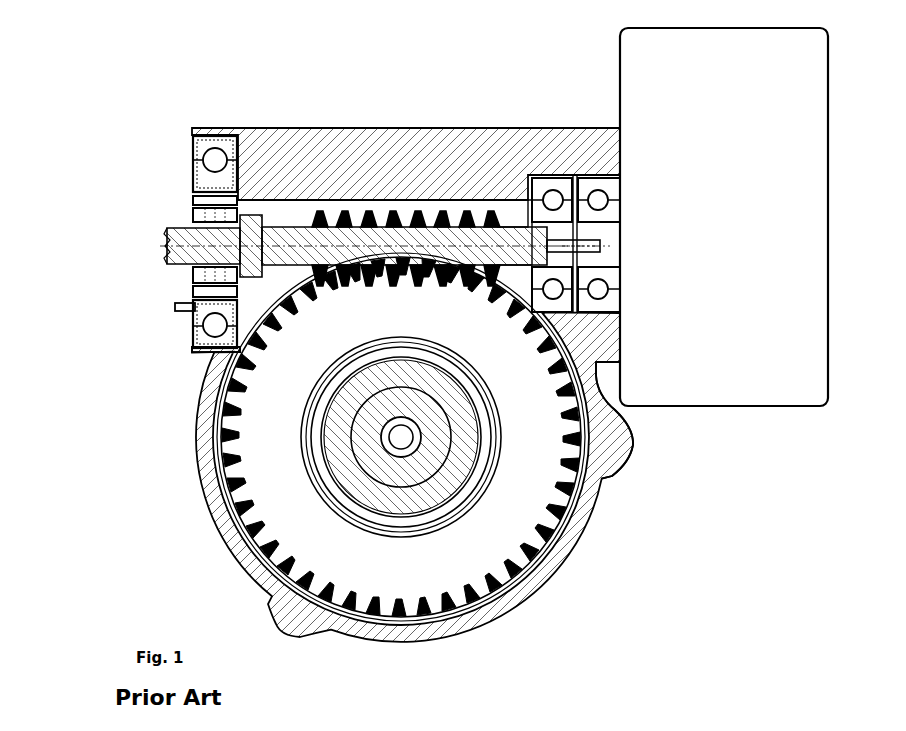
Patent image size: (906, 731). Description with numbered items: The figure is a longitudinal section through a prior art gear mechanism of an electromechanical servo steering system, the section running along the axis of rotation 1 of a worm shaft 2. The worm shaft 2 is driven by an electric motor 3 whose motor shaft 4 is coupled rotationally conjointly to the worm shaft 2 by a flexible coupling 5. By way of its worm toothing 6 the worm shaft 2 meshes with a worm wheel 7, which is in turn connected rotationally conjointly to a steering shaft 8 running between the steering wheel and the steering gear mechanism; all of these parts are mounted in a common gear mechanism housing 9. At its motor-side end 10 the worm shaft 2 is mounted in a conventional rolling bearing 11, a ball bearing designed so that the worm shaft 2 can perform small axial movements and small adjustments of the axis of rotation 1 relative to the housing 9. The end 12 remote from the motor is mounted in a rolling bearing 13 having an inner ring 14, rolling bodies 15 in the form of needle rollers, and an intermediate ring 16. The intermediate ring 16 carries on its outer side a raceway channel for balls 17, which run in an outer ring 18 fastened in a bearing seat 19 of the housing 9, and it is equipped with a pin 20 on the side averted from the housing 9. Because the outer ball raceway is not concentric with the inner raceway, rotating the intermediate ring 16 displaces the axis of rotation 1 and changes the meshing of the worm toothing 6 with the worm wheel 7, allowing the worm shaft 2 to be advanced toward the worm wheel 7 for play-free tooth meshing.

The axis of rotation 1 is at (172, 240).
The worm shaft 2 is at (385, 185).
The electric motor 3 is at (775, 388).
The motor shaft 4 is at (604, 248).
The flexible coupling 5 is at (585, 180).
The worm toothing 6 is at (415, 235).
The worm wheel 7 is at (560, 515).
The steering shaft 8 is at (463, 527).
The gear mechanism housing 9 is at (617, 450).
The motor-side end 10 is at (505, 225).
The rolling bearing 11 is at (556, 200).
The end remote from the motor 12 is at (193, 200).
The rolling bearing 13 is at (200, 212).
The inner ring 14 is at (193, 273).
The rolling bodies 15 is at (193, 291).
The intermediate ring 16 is at (203, 308).
The balls 17 is at (217, 322).
The outer ring 18 is at (200, 323).
The bearing seat 19 is at (190, 142).
The pin 20 is at (177, 307).